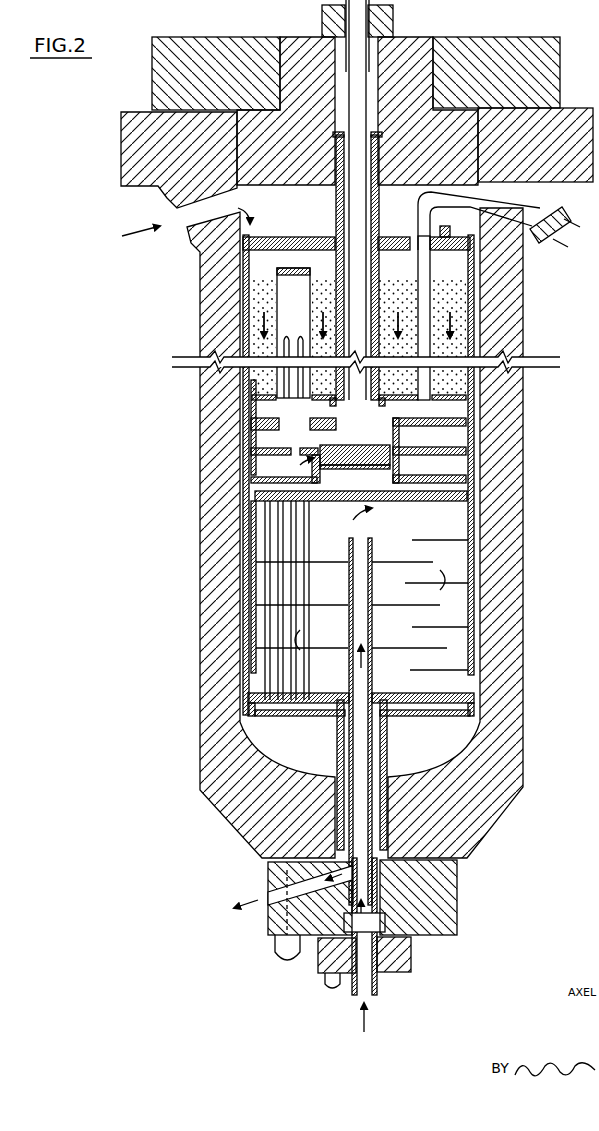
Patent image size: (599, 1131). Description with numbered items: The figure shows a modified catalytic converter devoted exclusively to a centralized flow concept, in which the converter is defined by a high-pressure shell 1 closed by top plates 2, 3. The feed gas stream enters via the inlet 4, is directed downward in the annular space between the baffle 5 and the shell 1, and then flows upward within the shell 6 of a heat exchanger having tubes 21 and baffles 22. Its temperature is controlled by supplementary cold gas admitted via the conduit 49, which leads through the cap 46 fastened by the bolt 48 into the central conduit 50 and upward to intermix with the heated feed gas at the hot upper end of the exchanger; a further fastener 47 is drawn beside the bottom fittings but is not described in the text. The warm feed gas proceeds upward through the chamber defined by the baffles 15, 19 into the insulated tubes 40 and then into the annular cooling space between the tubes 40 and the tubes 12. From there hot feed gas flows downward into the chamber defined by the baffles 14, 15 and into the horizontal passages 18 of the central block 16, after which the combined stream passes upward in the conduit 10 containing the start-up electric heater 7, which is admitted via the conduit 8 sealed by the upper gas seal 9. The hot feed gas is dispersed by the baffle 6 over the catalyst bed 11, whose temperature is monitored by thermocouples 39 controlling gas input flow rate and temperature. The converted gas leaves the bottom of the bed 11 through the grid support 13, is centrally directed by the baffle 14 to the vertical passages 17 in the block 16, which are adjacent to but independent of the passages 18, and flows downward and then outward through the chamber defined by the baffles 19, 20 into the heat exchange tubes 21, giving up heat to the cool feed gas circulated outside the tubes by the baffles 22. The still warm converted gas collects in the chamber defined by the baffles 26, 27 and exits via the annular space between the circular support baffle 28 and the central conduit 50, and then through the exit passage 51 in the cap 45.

The high-pressure shell 1 is at (530, 315).
The top plate 2 is at (400, 37).
The top plate 3 is at (560, 76).
The gas inlet 4 is at (178, 232).
The baffle 5 is at (288, 240).
The heat exchanger shell / baffle 6 is at (282, 253).
The start-up electric heater 7 is at (349, 113).
The conduit 8 is at (344, 213).
The upper gas seal 9 is at (371, 133).
The conduit 10 is at (370, 404).
The catalyst bed 11 is at (432, 290).
The tube 12 is at (310, 294).
The grid support 13 is at (416, 397).
The baffle 14 is at (252, 407).
The baffle 15 is at (252, 469).
The central block 16 is at (358, 456).
The vertical passages 17 is at (396, 432).
The horizontal passages 18 is at (335, 444).
The baffle 19 is at (408, 480).
The baffle 20 is at (447, 506).
The heat exchanger tubes 21 is at (330, 535).
The baffles 22 is at (320, 614).
The baffle 26 is at (410, 694).
The baffle 27 is at (430, 716).
The circular support baffle 28 is at (337, 752).
The thermocouples 39 is at (433, 338).
The insulated tubes 40 is at (280, 430).
The cap 45 is at (458, 890).
The cap 46 is at (410, 975).
The bolt 47 is at (276, 958).
The bolt 48 is at (320, 982).
The conduit 49 is at (376, 1000).
The central conduit 50 is at (374, 588).
The exit passage 51 is at (266, 912).